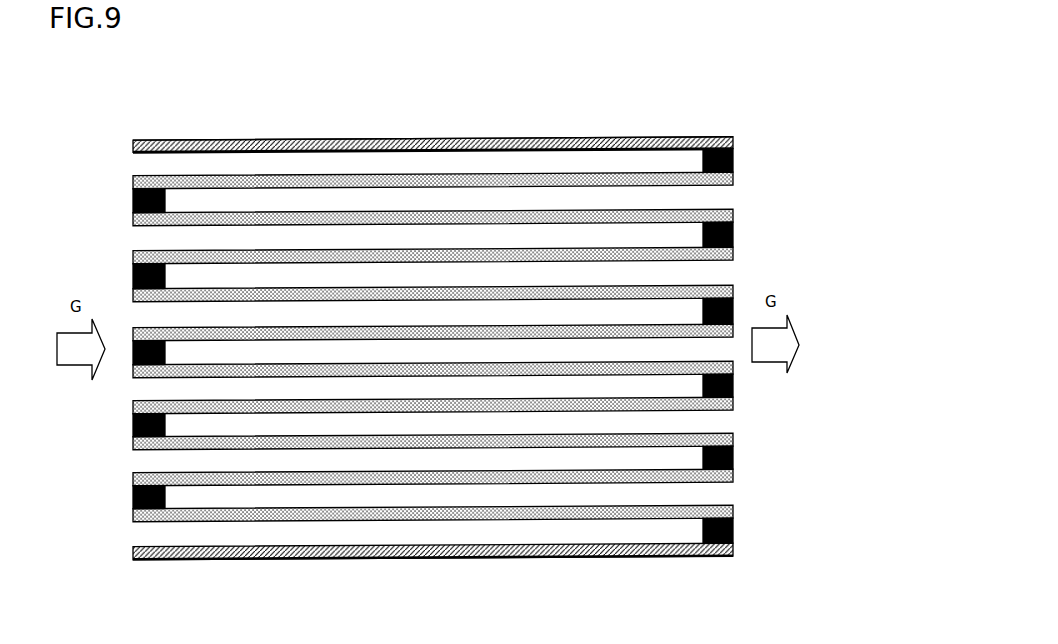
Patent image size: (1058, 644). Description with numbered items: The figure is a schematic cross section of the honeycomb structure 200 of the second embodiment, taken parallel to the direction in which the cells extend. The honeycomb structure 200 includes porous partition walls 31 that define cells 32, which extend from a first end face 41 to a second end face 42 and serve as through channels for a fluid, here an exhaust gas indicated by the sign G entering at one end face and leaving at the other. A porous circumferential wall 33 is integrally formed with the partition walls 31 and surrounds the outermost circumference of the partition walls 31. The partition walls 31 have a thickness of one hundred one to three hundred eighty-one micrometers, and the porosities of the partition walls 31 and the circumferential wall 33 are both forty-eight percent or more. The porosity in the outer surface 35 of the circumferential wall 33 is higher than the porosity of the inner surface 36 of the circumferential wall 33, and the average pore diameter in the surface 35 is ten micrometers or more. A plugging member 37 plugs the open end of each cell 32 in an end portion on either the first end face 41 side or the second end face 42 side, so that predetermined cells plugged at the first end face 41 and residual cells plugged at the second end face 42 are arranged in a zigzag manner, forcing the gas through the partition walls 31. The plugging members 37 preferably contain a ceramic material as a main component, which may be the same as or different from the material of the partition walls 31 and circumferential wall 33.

The honeycomb structure 200 is at (727, 43).
The partition walls 31 is at (463, 183).
The cells 32 is at (248, 238).
The circumferential wall 33 is at (522, 138).
The surface of the circumferential wall 35 is at (175, 138).
The inner surface of the circumferential wall 36 is at (172, 156).
The plugging member 37 is at (133, 200).
The first end face 41 is at (123, 544).
The second end face 42 is at (743, 535).